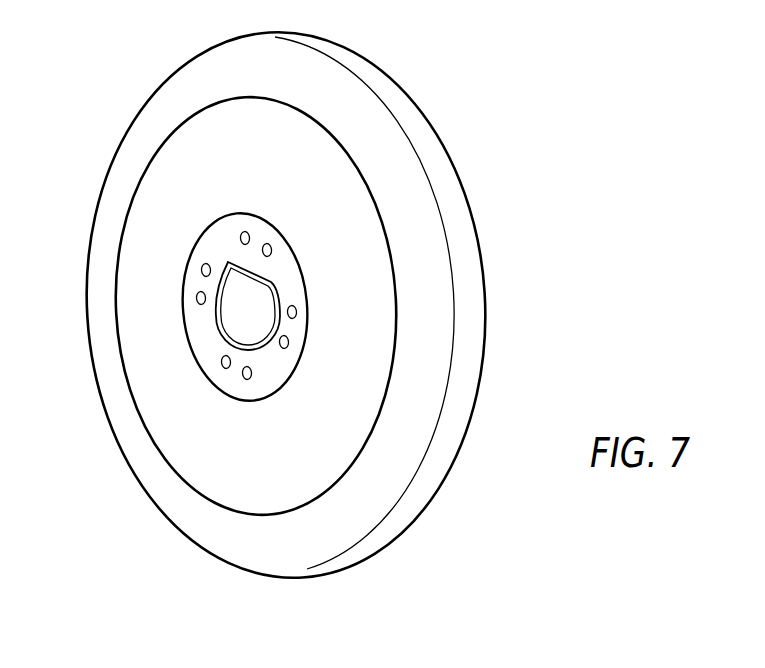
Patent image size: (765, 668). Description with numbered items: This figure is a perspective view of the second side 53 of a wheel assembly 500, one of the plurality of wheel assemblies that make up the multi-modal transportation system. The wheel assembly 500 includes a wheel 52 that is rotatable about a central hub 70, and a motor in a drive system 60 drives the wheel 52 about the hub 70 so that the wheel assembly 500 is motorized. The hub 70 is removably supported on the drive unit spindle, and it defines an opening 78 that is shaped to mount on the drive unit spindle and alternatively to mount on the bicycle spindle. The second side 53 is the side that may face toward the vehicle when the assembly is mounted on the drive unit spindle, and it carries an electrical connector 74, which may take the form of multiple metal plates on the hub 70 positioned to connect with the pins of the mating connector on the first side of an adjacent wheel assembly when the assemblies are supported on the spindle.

The wheel assembly 500 is at (443, 180).
The wheel 52 is at (190, 88).
The second side 53 is at (185, 423).
The drive system 60 is at (213, 476).
The hub 70 is at (205, 335).
The electrical connector 74 is at (194, 300).
The opening 78 is at (255, 322).